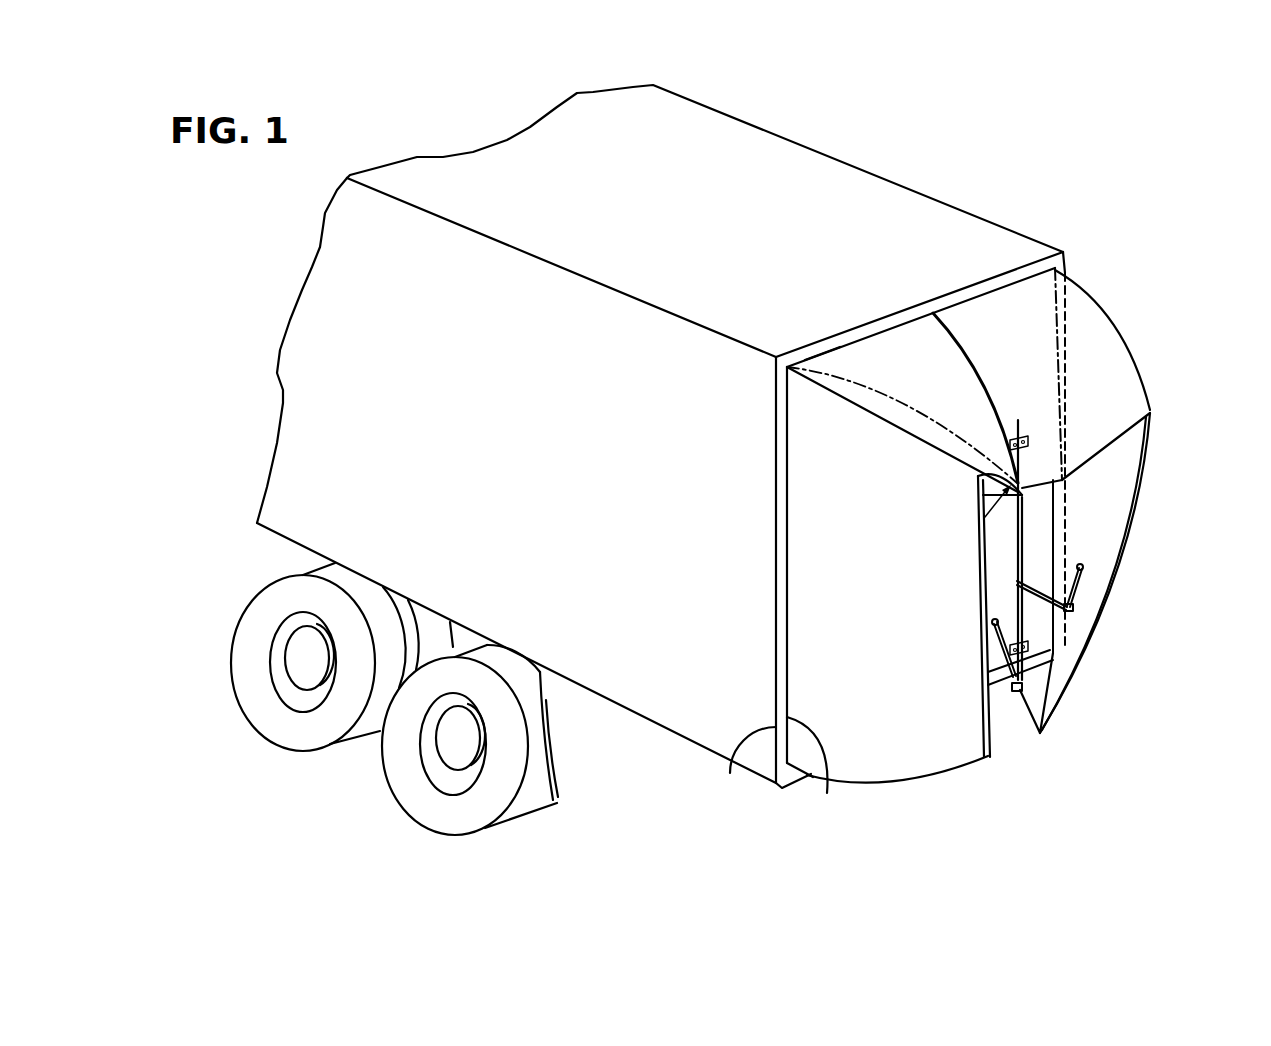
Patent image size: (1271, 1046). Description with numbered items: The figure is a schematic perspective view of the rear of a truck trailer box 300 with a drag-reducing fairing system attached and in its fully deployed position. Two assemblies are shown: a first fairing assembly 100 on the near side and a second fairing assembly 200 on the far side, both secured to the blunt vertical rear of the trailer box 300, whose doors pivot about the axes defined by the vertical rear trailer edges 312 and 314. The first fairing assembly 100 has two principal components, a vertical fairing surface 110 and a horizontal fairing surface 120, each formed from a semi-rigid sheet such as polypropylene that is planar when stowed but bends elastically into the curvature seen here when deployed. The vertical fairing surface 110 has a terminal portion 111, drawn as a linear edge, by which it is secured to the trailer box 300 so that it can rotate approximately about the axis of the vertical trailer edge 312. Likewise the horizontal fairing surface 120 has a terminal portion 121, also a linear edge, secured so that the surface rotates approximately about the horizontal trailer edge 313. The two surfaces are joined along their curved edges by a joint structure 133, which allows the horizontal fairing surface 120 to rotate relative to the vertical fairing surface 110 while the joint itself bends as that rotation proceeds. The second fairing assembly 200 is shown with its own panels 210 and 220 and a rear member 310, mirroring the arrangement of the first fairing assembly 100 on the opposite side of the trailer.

The first fairing assembly 100 is at (862, 554).
The vertical fairing surface 110 is at (935, 757).
The terminal portion 111 is at (817, 771).
The horizontal fairing surface 120 is at (873, 348).
The terminal portion 121 is at (820, 347).
The joint structure 133 is at (907, 430).
The second fairing assembly 200 is at (1129, 501).
The side fairing panel 210 is at (1120, 580).
The top fairing panel 220 is at (1132, 383).
The trailer box 300 is at (541, 456).
The latch mechanism 310 is at (1042, 645).
The vertical rear trailer edge 312 is at (747, 582).
The horizontal trailer edge 313 is at (980, 292).
The vertical rear trailer edge 314 is at (1067, 318).